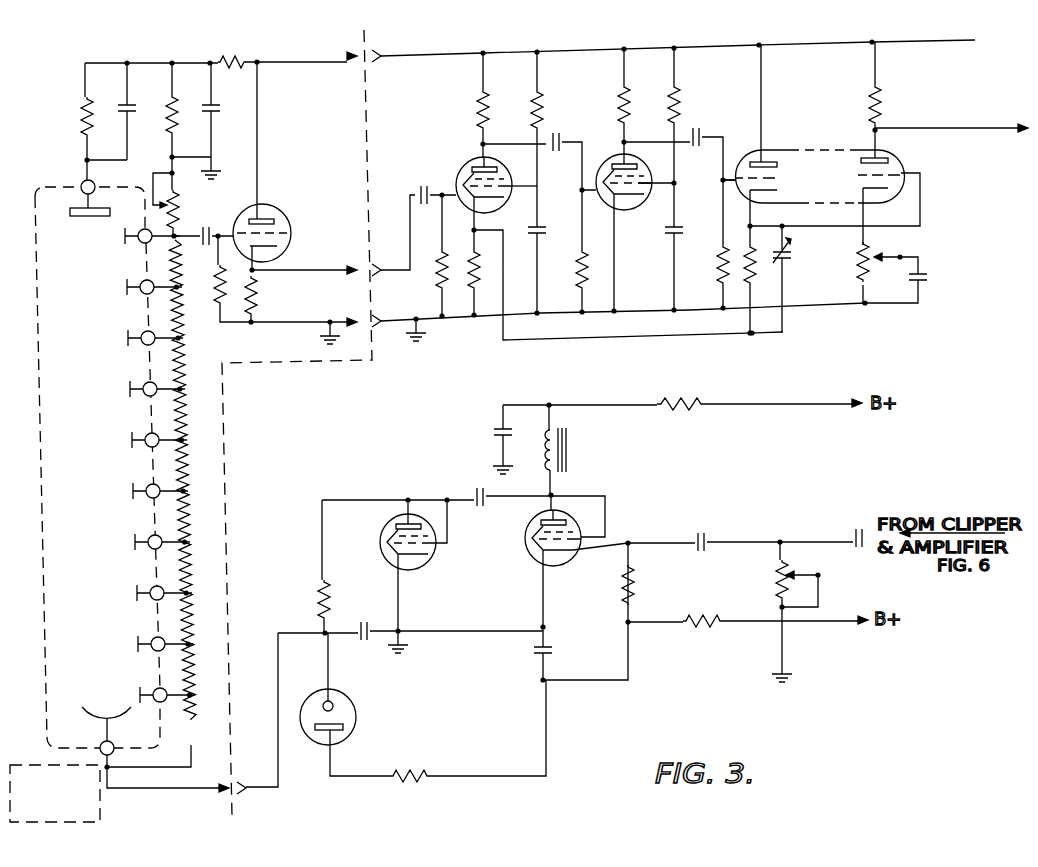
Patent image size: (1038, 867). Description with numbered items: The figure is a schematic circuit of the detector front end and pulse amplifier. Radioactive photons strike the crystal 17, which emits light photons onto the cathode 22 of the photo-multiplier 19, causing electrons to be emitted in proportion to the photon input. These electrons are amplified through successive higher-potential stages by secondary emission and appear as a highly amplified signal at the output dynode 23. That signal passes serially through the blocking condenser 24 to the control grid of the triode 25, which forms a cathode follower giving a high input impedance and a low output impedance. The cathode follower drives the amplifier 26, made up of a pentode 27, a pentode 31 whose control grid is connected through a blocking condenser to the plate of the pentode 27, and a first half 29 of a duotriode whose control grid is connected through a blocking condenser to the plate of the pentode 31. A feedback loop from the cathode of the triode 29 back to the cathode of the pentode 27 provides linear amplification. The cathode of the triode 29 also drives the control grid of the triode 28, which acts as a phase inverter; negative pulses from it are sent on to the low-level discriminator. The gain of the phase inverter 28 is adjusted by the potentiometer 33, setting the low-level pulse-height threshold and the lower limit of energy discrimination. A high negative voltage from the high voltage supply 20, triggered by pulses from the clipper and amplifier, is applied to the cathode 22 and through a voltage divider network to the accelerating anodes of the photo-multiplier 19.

The crystal 17 is at (100, 815).
The photo-multiplier tube 19 is at (37, 352).
The high voltage supply 20 is at (662, 516).
The cathode 22 is at (89, 712).
The output dynode 23 is at (124, 237).
The blocking condenser 24 is at (207, 229).
The triode 25 is at (283, 210).
The amplifier 26 is at (590, 105).
The pentode 27 is at (461, 166).
The triode 28 is at (903, 165).
The first half of duotriode 29 is at (750, 150).
The pentode 31 is at (608, 156).
The potentiometer 33 is at (858, 257).